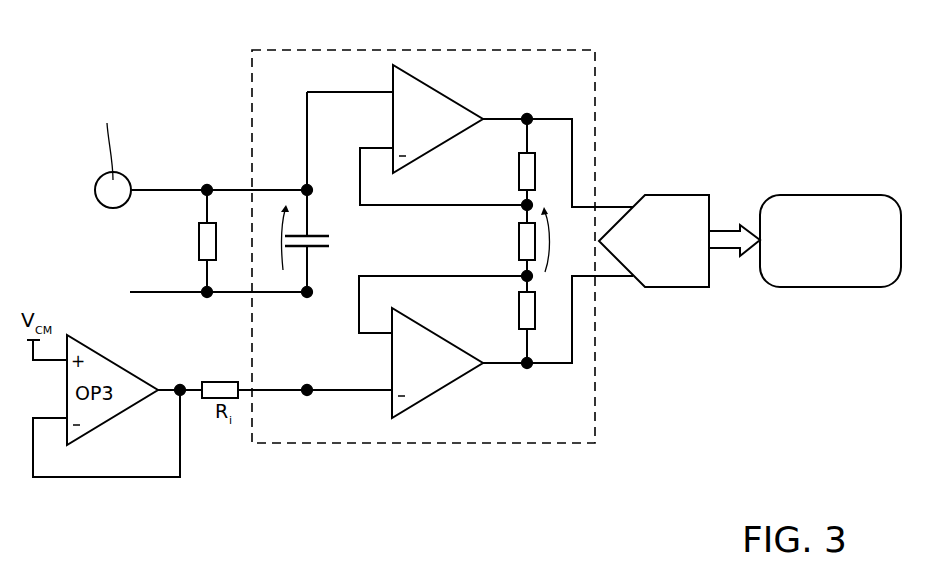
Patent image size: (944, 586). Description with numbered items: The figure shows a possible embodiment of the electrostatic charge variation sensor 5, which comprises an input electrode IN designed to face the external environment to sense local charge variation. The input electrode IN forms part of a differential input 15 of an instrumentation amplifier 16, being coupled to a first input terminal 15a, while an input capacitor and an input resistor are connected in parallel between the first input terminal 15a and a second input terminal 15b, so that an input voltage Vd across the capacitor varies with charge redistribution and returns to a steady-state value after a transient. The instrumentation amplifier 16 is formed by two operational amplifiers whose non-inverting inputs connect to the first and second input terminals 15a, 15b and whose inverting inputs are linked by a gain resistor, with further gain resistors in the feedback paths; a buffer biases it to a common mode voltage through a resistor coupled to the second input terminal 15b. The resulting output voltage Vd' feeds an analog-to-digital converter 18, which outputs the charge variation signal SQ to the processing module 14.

The electrostatic charge variation sensor 5 is at (49, 168).
The processing module 14 is at (838, 203).
The differential input 15 is at (155, 255).
The first input terminal 15a is at (309, 186).
The second input terminal 15b is at (310, 296).
The instrumentation amplifier 16 is at (461, 72).
The analog-to-digital converter 18 is at (680, 205).